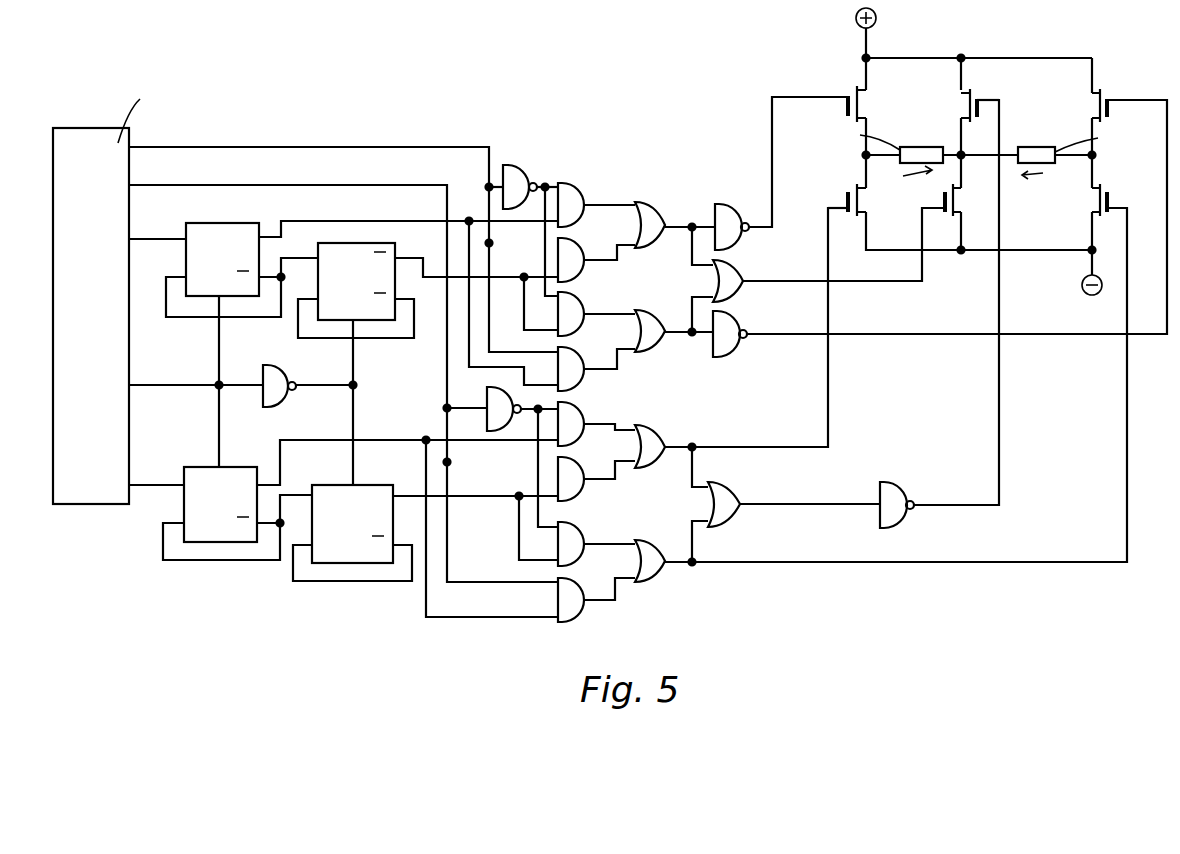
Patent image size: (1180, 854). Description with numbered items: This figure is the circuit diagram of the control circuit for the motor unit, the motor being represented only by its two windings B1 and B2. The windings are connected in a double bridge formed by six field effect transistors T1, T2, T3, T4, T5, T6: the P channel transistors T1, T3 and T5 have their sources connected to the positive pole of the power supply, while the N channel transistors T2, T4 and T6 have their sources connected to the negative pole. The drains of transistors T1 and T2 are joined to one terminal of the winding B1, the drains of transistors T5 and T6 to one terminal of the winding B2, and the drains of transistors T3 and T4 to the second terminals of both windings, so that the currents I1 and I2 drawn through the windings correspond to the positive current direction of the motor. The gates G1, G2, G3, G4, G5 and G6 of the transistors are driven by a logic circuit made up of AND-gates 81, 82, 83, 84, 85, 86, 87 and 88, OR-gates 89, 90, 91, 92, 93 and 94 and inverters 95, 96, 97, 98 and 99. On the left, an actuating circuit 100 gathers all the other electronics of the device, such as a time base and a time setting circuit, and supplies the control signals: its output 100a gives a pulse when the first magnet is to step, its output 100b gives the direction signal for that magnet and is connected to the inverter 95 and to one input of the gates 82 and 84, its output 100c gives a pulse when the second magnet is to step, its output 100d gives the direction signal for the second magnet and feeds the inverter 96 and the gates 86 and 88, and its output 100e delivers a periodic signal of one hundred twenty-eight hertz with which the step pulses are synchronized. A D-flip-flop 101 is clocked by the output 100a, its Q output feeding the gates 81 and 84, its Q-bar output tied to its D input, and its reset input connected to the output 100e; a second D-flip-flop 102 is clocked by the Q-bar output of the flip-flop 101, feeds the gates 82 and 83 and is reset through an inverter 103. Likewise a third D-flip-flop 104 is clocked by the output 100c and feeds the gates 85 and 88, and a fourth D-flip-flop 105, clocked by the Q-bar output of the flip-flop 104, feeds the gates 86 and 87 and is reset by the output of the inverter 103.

The actuating circuit 100 is at (92, 136).
The output of the actuating circuit 100a is at (158, 226).
The output of the actuating circuit 100b is at (343, 236).
The output of the actuating circuit 100c is at (159, 472).
The output of the actuating circuit 100d is at (343, 370).
The output of the actuating circuit 100e is at (196, 374).
The D-flip-flop 101 is at (207, 236).
The D-flip-flop 102 is at (392, 249).
The inverter 103 is at (282, 397).
The D-flip-flop 104 is at (197, 466).
The D-flip-flop 105 is at (368, 486).
The AND-gate 81 is at (586, 191).
The AND-gate 82 is at (586, 247).
The AND-gate 83 is at (583, 304).
The AND-gate 84 is at (583, 357).
The AND-gate 85 is at (583, 412).
The AND-gate 86 is at (580, 465).
The AND-gate 87 is at (582, 534).
The AND-gate 88 is at (576, 612).
The OR-gate 89 is at (659, 210).
The OR-gate 90 is at (641, 312).
The OR-gate 91 is at (663, 432).
The OR-gate 92 is at (659, 568).
The OR-gate 93 is at (736, 272).
The OR-gate 94 is at (731, 492).
The inverter 95 is at (520, 174).
The inverter 96 is at (488, 400).
The inverter 97 is at (726, 200).
The inverter 98 is at (736, 325).
The inverter 99 is at (898, 492).
The field effect transistor T1 is at (868, 104).
The field effect transistor T2 is at (864, 210).
The field effect transistor T3 is at (958, 104).
The field effect transistor T4 is at (973, 201).
The field effect transistor T5 is at (1088, 106).
The field effect transistor T6 is at (1090, 206).
The gate of transistor T1 G1 is at (810, 91).
The gate of transistor T2 G2 is at (830, 197).
The gate of transistor T3 G3 is at (993, 92).
The gate of transistor T4 G4 is at (932, 204).
The gate of transistor T5 G5 is at (1127, 92).
The gate of transistor T6 G6 is at (1125, 207).
The winding B1 is at (918, 147).
The winding B2 is at (1036, 147).
The current I1 is at (912, 183).
The current I2 is at (1026, 188).